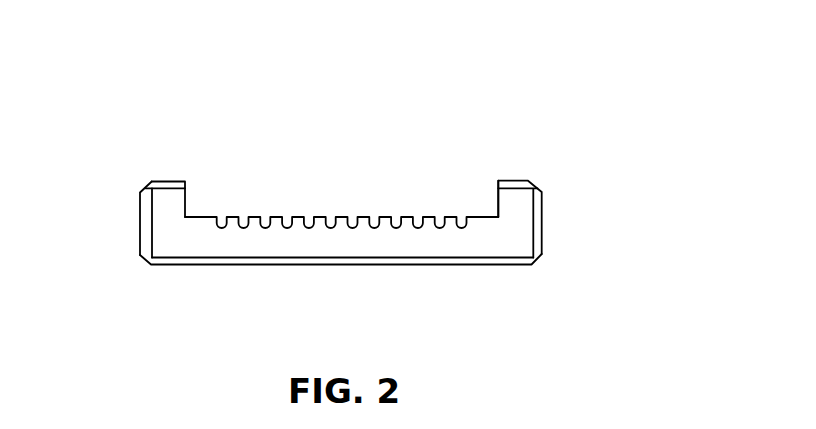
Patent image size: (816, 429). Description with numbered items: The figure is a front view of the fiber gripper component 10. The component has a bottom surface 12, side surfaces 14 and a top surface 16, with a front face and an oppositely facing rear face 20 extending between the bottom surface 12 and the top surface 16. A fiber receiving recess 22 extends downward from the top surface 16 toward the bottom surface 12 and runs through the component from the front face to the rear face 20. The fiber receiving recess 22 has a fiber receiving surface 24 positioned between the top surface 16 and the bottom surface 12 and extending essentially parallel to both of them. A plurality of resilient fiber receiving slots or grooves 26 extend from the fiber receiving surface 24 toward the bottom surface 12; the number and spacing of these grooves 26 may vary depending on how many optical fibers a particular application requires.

The fiber gripper component 10 is at (348, 186).
The bottom surface 12 is at (297, 262).
The side surfaces 14 is at (140, 220).
The top surface 16 is at (172, 181).
The rear face 20 is at (503, 240).
The fiber receiving recess 22 is at (207, 197).
The fiber receiving surface 24 is at (482, 217).
The fiber receiving grooves 26 is at (350, 219).